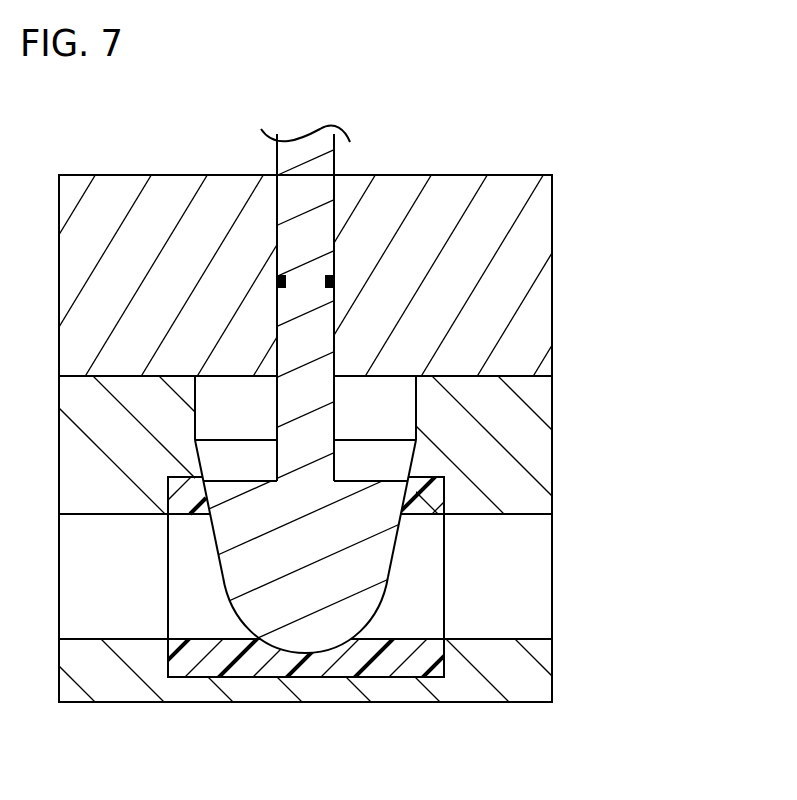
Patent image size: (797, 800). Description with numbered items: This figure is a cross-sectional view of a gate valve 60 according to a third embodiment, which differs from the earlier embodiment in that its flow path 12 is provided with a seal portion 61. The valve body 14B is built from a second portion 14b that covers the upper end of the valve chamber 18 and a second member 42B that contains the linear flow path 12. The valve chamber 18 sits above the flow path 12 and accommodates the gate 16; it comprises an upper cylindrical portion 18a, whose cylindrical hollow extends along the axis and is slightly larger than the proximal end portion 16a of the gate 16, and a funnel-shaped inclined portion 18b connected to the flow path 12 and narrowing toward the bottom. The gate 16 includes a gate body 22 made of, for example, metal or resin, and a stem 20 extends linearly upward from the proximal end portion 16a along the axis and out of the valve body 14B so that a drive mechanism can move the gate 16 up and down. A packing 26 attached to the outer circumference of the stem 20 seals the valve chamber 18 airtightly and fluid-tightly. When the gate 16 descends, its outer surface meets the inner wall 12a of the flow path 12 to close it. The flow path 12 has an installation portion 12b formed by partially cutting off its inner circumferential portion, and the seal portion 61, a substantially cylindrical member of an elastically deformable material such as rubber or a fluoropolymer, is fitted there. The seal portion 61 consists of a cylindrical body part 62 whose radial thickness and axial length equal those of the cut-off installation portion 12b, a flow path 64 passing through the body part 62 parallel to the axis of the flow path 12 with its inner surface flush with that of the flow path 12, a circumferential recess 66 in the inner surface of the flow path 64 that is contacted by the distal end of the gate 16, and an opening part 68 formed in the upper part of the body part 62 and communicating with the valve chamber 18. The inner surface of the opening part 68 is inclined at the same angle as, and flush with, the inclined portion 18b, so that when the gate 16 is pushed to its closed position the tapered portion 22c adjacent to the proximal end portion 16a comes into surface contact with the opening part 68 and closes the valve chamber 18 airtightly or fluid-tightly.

The gate valve 60 is at (82, 120).
The stem 20 is at (288, 387).
The packing 26 is at (338, 284).
The second portion 14b is at (553, 254).
The valve body 14B is at (344, 340).
The valve chamber 18 is at (356, 396).
The cylindrical portion 18a is at (404, 391).
The inclined portion 18b is at (399, 462).
The second member 42B is at (553, 428).
The flow path 12 is at (323, 633).
The inner wall 12a is at (553, 540).
The installation portion 12b is at (210, 676).
The gate 16 is at (288, 387).
The gate body 22 is at (331, 387).
The proximal end portion 16a is at (358, 474).
The tapered portion 22c is at (399, 540).
The opening part 68 is at (207, 490).
The recess 66 is at (317, 650).
The flow path 64 is at (422, 600).
The body part 62 is at (375, 668).
The seal portion 61 is at (446, 566).